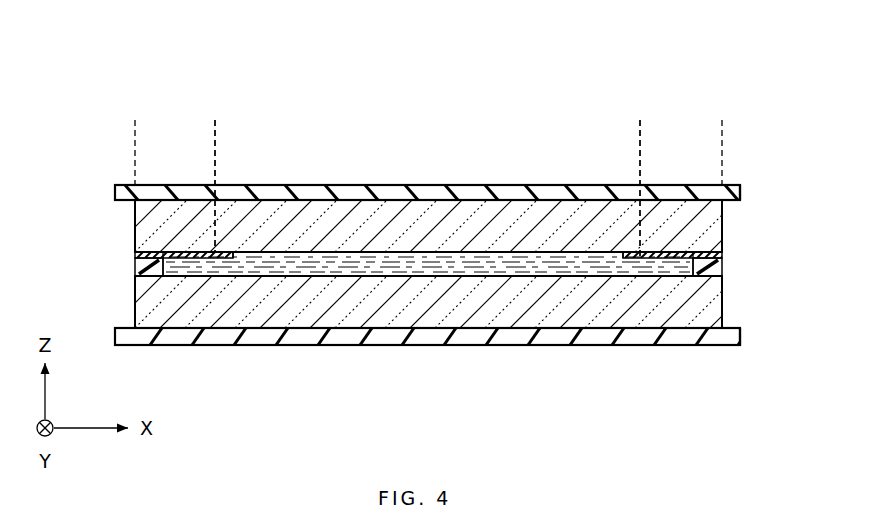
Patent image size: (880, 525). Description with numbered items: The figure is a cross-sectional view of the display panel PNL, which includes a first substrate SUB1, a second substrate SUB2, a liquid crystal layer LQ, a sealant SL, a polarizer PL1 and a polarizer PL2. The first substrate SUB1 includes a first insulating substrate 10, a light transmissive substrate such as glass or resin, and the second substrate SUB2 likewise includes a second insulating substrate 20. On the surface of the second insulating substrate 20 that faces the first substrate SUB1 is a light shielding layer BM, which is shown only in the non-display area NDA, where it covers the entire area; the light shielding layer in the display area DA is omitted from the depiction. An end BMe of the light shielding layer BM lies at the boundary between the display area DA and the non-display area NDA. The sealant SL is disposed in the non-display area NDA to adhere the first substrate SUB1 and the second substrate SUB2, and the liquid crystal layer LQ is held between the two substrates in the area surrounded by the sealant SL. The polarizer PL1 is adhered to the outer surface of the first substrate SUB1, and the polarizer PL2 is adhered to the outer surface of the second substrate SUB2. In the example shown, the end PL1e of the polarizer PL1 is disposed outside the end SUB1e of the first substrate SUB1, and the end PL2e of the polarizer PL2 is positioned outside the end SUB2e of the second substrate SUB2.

The display panel PNL is at (148, 88).
The non-display area NDA is at (136, 133).
The display area DA is at (216, 133).
The polarizer PL2 is at (686, 187).
The end of the polarizer PL2 PL2e is at (743, 193).
The second substrate SUB2 is at (133, 227).
The end of the second substrate SUB2e is at (724, 219).
The second insulating substrate 20 is at (712, 235).
The light shielding layer BM is at (135, 252).
The end of the light shielding layer BMe is at (243, 254).
The sealant SL is at (137, 268).
The liquid crystal layer LQ is at (425, 262).
The first substrate SUB1 is at (133, 311).
The end of the first substrate SUB1e is at (724, 316).
The first insulating substrate 10 is at (712, 292).
The polarizer PL1 is at (668, 340).
The end of the polarizer PL1 PL1e is at (743, 337).